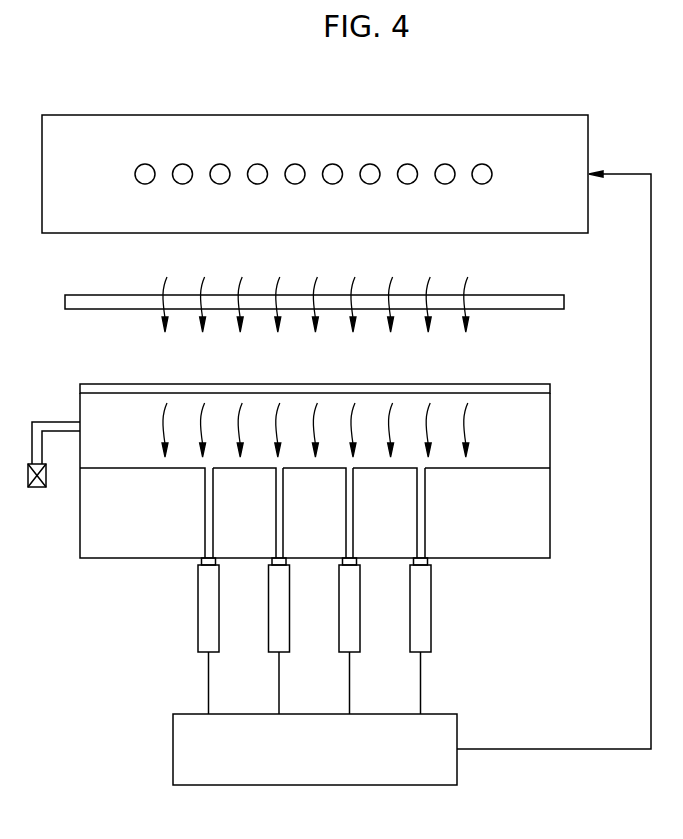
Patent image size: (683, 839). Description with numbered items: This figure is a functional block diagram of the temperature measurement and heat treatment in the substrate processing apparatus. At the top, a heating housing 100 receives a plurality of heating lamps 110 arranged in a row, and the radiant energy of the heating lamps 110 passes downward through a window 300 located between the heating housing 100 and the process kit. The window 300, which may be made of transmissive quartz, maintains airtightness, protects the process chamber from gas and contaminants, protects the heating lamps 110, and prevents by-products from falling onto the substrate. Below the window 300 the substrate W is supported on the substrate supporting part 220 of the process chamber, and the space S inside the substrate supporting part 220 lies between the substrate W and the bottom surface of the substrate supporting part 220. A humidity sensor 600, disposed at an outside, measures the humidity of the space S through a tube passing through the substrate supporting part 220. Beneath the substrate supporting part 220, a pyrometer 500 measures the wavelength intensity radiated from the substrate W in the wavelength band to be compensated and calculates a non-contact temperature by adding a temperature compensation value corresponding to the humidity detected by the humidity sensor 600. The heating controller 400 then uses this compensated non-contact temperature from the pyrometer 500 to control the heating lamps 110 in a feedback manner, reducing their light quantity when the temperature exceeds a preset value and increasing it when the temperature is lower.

The heating housing 100 is at (607, 125).
The heating lamps 110 is at (147, 163).
The window 300 is at (523, 294).
The substrate W is at (551, 388).
The space S is at (266, 441).
The substrate supporting part 220 is at (551, 513).
The humidity sensor 600 is at (36, 488).
The pyrometer 500 is at (431, 610).
The heating controller 400 is at (458, 732).